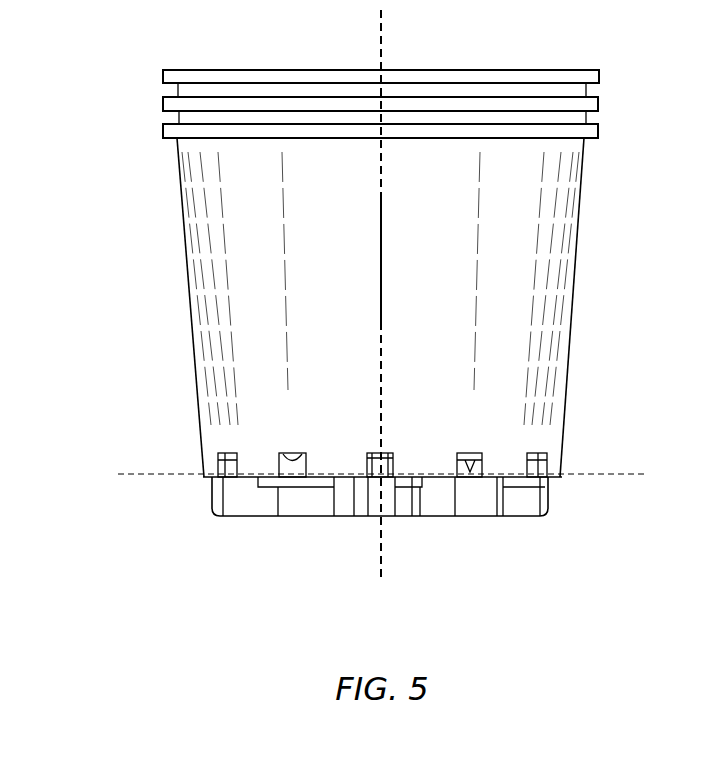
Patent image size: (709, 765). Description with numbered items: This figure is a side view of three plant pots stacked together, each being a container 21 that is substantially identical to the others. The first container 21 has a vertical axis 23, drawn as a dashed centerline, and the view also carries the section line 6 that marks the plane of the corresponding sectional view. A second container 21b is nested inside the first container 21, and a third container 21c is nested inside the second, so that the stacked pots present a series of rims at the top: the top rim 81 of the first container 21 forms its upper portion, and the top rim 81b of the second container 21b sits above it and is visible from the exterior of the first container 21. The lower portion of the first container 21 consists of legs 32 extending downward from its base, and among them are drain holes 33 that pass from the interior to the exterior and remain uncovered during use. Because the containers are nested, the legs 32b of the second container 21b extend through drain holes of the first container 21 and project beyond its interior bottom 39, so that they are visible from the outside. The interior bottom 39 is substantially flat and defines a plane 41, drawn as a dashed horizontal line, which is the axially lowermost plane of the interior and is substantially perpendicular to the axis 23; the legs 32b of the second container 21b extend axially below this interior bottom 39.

The section line 6- 6 is at (381, 5).
The container 21 is at (155, 128).
The second container 21b is at (155, 101).
The third container 21c is at (155, 73).
The axis 23 is at (383, 281).
The legs 32 is at (468, 502).
The legs of the second container 32b is at (518, 485).
The drain holes 33 is at (296, 461).
The interior bottom 39 is at (470, 462).
The plane 41 is at (603, 473).
The top rim 81 is at (598, 131).
The top rim of the second container 81b is at (598, 104).